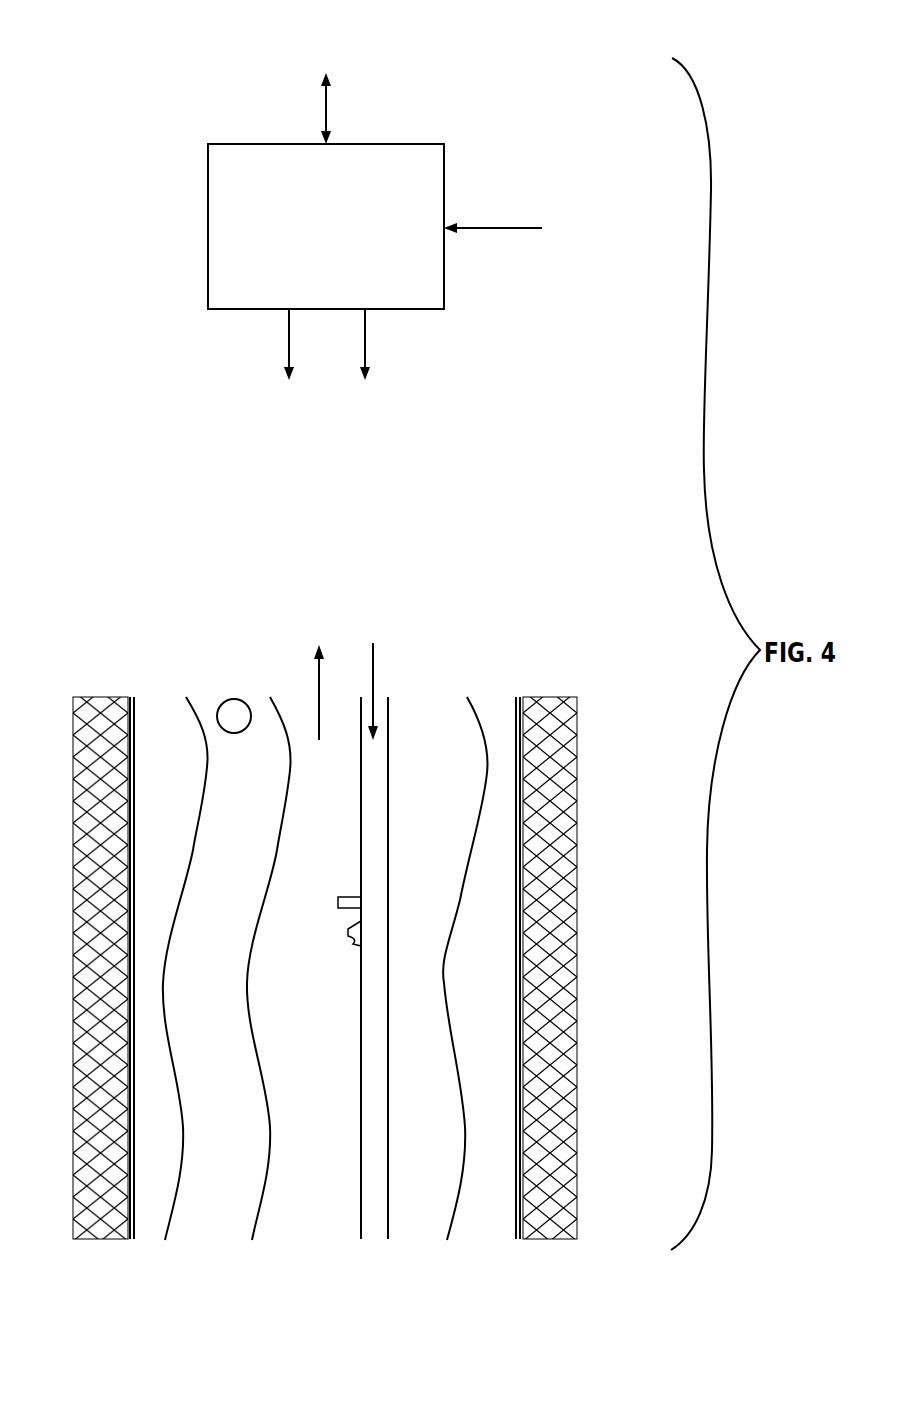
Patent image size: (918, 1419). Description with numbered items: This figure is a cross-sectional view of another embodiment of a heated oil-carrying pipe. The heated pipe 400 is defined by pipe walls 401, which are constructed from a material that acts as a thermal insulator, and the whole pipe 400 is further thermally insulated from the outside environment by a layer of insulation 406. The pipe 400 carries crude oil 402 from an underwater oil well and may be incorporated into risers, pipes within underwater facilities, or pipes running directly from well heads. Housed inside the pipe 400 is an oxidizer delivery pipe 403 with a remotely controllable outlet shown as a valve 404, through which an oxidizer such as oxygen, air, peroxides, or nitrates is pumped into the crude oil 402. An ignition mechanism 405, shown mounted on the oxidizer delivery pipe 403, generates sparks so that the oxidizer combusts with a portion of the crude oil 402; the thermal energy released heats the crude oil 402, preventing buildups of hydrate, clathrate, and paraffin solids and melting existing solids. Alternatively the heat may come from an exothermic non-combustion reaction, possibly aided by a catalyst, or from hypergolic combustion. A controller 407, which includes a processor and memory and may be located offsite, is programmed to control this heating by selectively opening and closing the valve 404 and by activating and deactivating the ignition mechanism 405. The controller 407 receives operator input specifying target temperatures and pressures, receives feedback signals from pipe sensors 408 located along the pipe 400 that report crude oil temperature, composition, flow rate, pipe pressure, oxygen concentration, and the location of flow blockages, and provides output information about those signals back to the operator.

The heated pipe 400 is at (562, 516).
The pipe walls 401 is at (518, 697).
The crude oil 402 is at (207, 1224).
The oxidizer delivery pipe 403 is at (373, 798).
The valve 404 is at (350, 941).
The ignition mechanism 405 is at (352, 897).
The layer of insulation 406 is at (565, 752).
The controller 407 is at (237, 144).
The pipe sensors 408 is at (236, 699).